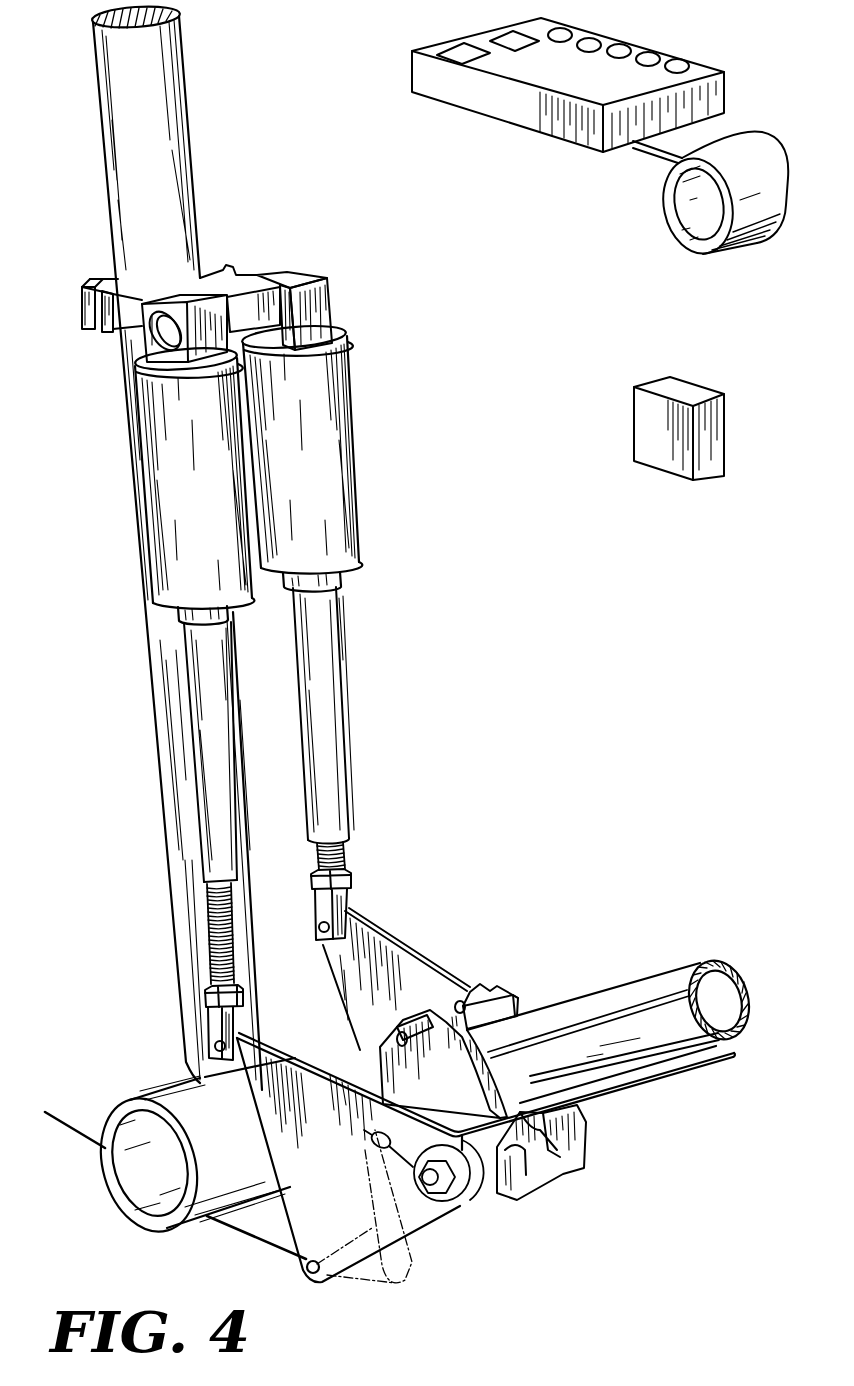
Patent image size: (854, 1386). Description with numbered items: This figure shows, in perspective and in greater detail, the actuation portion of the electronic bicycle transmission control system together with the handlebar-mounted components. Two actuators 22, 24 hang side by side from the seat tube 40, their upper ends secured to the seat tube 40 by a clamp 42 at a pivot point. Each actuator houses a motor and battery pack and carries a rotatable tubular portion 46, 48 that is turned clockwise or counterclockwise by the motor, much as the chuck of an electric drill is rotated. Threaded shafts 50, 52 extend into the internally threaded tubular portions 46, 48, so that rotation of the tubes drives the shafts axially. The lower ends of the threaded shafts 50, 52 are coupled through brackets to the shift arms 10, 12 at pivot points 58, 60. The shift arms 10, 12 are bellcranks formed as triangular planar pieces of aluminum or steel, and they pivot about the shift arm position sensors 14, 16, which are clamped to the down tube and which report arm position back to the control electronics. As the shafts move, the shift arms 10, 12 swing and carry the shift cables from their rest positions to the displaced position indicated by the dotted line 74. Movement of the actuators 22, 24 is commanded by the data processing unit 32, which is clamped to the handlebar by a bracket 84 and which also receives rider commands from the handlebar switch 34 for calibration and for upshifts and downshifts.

The shift arm 10 is at (303, 1217).
The shift arm 12 is at (403, 953).
The shift arm position sensor 14 is at (510, 1193).
The shift arm position sensor 16 is at (575, 1146).
The actuator 22 is at (175, 470).
The actuator 24 is at (330, 460).
The data processing unit 32 is at (464, 37).
The handlebar switch 34 is at (685, 389).
The seat tube 40 is at (178, 187).
The clamp 42 is at (222, 273).
The rotatable tubular portion 46 is at (203, 715).
The rotatable tubular portion 48 is at (333, 693).
The threaded shaft 50 is at (210, 933).
The threaded shaft 52 is at (345, 857).
The pivot point 58 is at (218, 1013).
The pivot point 60 is at (350, 900).
The dotted line 74 is at (412, 1268).
The bracket 84 is at (759, 156).